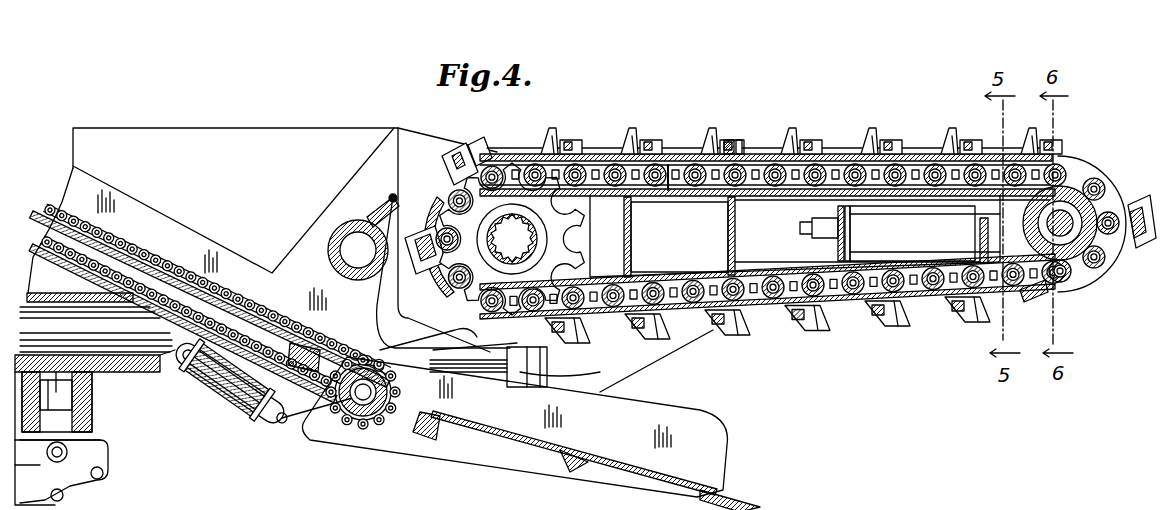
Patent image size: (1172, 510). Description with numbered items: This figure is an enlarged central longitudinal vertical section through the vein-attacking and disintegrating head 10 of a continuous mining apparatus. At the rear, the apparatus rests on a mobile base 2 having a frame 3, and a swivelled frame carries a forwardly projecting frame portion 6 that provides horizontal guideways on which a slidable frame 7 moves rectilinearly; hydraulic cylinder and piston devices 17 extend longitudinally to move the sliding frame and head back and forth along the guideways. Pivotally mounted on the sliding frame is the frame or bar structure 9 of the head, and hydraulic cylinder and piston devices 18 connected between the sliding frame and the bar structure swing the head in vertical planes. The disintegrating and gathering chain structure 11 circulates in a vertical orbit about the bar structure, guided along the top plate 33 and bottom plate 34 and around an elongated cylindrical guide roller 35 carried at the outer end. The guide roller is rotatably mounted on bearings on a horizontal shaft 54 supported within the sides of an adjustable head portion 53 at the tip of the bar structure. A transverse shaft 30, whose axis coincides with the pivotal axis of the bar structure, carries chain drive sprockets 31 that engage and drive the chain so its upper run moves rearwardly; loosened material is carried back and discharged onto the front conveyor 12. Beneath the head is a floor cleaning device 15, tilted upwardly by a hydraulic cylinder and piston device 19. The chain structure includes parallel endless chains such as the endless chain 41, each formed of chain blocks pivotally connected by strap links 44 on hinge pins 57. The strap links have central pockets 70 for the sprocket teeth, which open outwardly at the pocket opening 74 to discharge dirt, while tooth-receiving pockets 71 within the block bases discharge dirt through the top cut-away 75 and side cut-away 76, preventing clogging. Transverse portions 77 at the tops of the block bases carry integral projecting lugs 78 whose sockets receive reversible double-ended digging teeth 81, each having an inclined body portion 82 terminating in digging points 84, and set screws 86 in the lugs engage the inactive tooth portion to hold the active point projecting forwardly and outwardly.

The mobile base 2 is at (93, 481).
The frame 3 is at (93, 410).
The forwardly projecting frame portion 6 is at (143, 378).
The slidable frame 7 is at (342, 130).
The frame or bar structure 9 is at (853, 142).
The vein-attacking and disintegrating head 10 is at (525, 148).
The disintegrating and gathering chain structure 11 is at (797, 122).
The front conveyor 12 is at (217, 282).
The floor cleaning device 15 is at (710, 443).
The hydraulic cylinder and piston devices 17 is at (65, 303).
The hydraulic cylinder and piston devices 18 is at (546, 360).
The hydraulic cylinder and piston device 19 is at (227, 410).
The transverse shaft 30 is at (493, 260).
The chain drive sprockets 31 is at (563, 258).
The top plate 33 is at (828, 172).
The bottom plate 34 is at (796, 297).
The guide roller 35 is at (1085, 180).
The endless chain 41 is at (862, 300).
The strap links 44 is at (925, 166).
The adjustable head portion 53 is at (1045, 284).
The horizontal shaft 54 is at (1075, 232).
The hinge pins 57 is at (931, 190).
The pockets 70 is at (679, 237).
The tooth-receiving pockets 71 is at (876, 186).
The pocket opening 74 is at (673, 190).
The top cut-away 75 is at (922, 302).
The side cut-away 76 is at (714, 186).
The transverse portions 77 is at (882, 136).
The projecting lugs 78 is at (740, 140).
The digging teeth 81 is at (620, 140).
The inclined body portion 82 is at (700, 136).
The digging points 84 is at (706, 128).
The set screws 86 is at (730, 140).